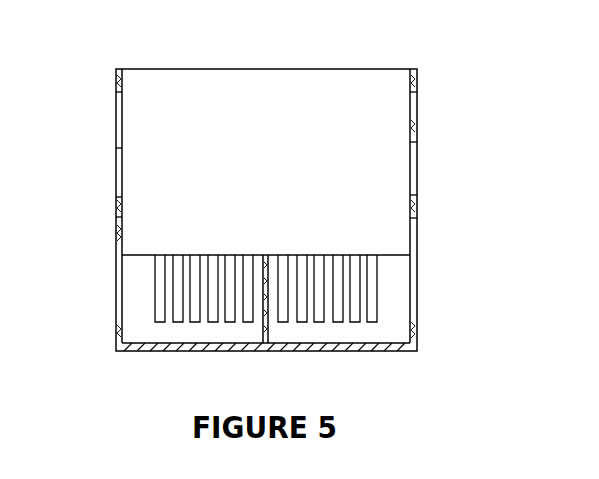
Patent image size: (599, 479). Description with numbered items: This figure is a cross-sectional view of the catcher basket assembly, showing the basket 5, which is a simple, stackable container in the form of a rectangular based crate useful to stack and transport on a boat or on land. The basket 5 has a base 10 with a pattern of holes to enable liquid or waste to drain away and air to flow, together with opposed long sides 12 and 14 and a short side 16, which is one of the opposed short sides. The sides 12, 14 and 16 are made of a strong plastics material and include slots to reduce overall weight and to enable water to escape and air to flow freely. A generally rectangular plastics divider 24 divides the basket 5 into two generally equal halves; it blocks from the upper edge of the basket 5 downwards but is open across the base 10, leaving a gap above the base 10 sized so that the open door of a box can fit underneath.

The basket 5 is at (116, 69).
The base 10 is at (142, 347).
The long side 12 is at (410, 140).
The long side 14 is at (116, 148).
The short side 16 is at (132, 290).
The divider 24 is at (146, 230).